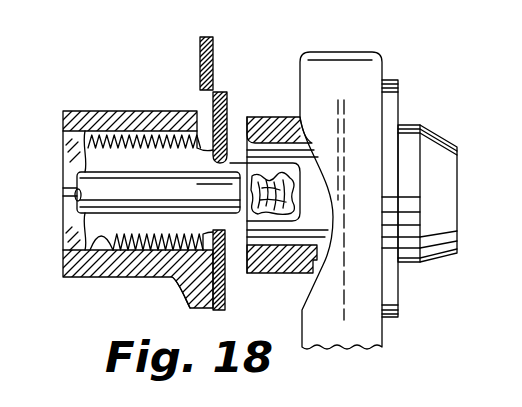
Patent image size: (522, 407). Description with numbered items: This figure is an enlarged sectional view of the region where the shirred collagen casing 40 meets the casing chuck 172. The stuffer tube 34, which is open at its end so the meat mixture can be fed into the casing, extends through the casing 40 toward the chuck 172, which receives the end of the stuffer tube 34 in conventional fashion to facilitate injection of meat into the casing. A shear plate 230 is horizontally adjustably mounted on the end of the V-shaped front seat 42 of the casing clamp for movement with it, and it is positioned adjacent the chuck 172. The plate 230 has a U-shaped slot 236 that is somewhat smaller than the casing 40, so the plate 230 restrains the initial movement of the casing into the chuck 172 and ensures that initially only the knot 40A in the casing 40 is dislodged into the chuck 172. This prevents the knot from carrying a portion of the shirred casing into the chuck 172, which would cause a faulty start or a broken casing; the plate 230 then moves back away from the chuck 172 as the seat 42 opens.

The collagen casing 40 is at (122, 137).
The stuffer tube 34 is at (167, 200).
The front seat 42 is at (183, 303).
The slot 236 is at (230, 163).
The shear plate 230 is at (227, 300).
The knot 40A is at (282, 172).
The casing chuck 172 is at (345, 62).